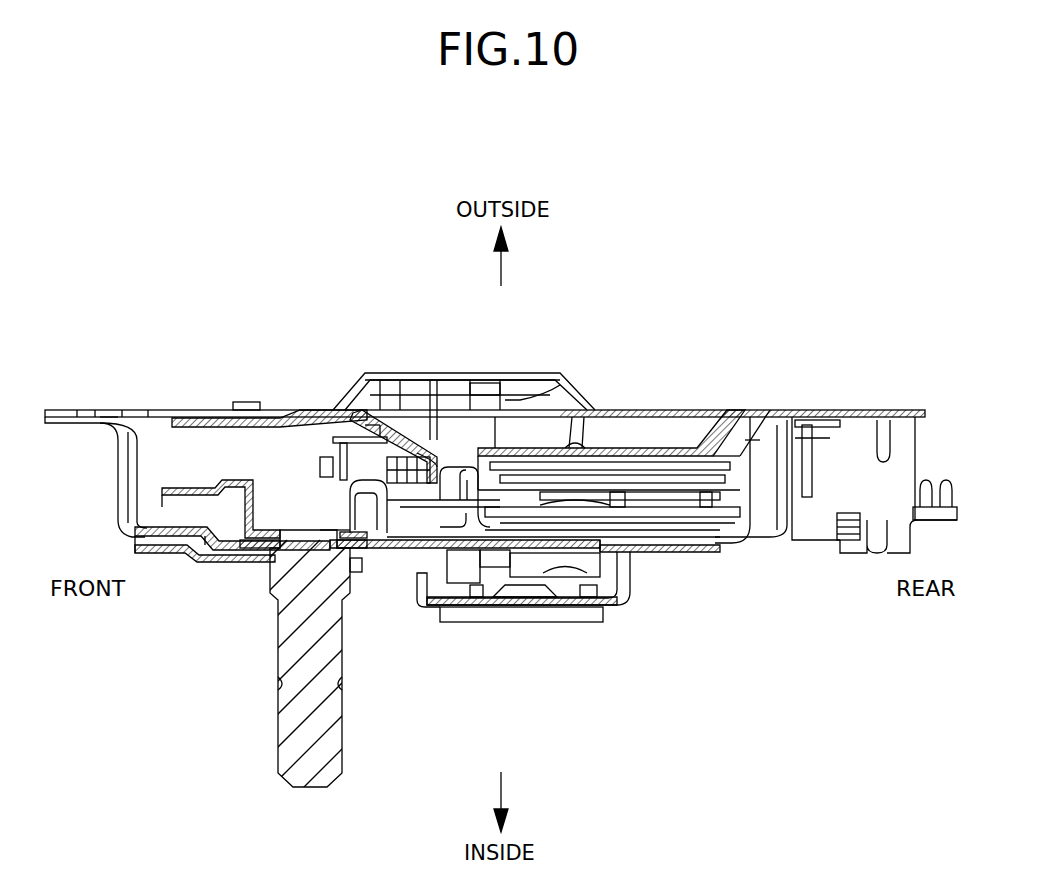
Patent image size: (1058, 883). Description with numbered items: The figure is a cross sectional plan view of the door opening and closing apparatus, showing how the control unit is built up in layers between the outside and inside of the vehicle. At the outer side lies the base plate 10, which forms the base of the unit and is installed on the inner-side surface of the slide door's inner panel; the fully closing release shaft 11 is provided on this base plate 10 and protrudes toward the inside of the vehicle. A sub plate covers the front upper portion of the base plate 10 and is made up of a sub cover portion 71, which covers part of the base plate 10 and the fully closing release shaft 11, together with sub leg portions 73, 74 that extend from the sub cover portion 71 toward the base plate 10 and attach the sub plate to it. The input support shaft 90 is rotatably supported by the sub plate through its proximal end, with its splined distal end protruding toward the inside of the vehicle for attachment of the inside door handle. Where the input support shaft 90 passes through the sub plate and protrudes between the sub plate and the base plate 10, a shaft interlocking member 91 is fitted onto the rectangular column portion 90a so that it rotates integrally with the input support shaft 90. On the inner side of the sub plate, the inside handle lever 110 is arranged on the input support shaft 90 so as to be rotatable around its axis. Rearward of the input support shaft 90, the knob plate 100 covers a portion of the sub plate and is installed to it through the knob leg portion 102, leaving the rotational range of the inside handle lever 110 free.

The base plate 10 is at (772, 410).
The fully closing release shaft 11 is at (578, 450).
The sub leg portion 73 is at (118, 496).
The sub cover portion 71 is at (199, 552).
The inside handle lever 110 is at (240, 563).
The input support shaft 90 is at (330, 762).
The rectangular column portion 90a is at (365, 560).
The shaft interlocking member 91 is at (265, 530).
The knob plate 100 is at (623, 607).
The knob leg portion 102 is at (633, 580).
The sub leg portion 74 is at (767, 503).